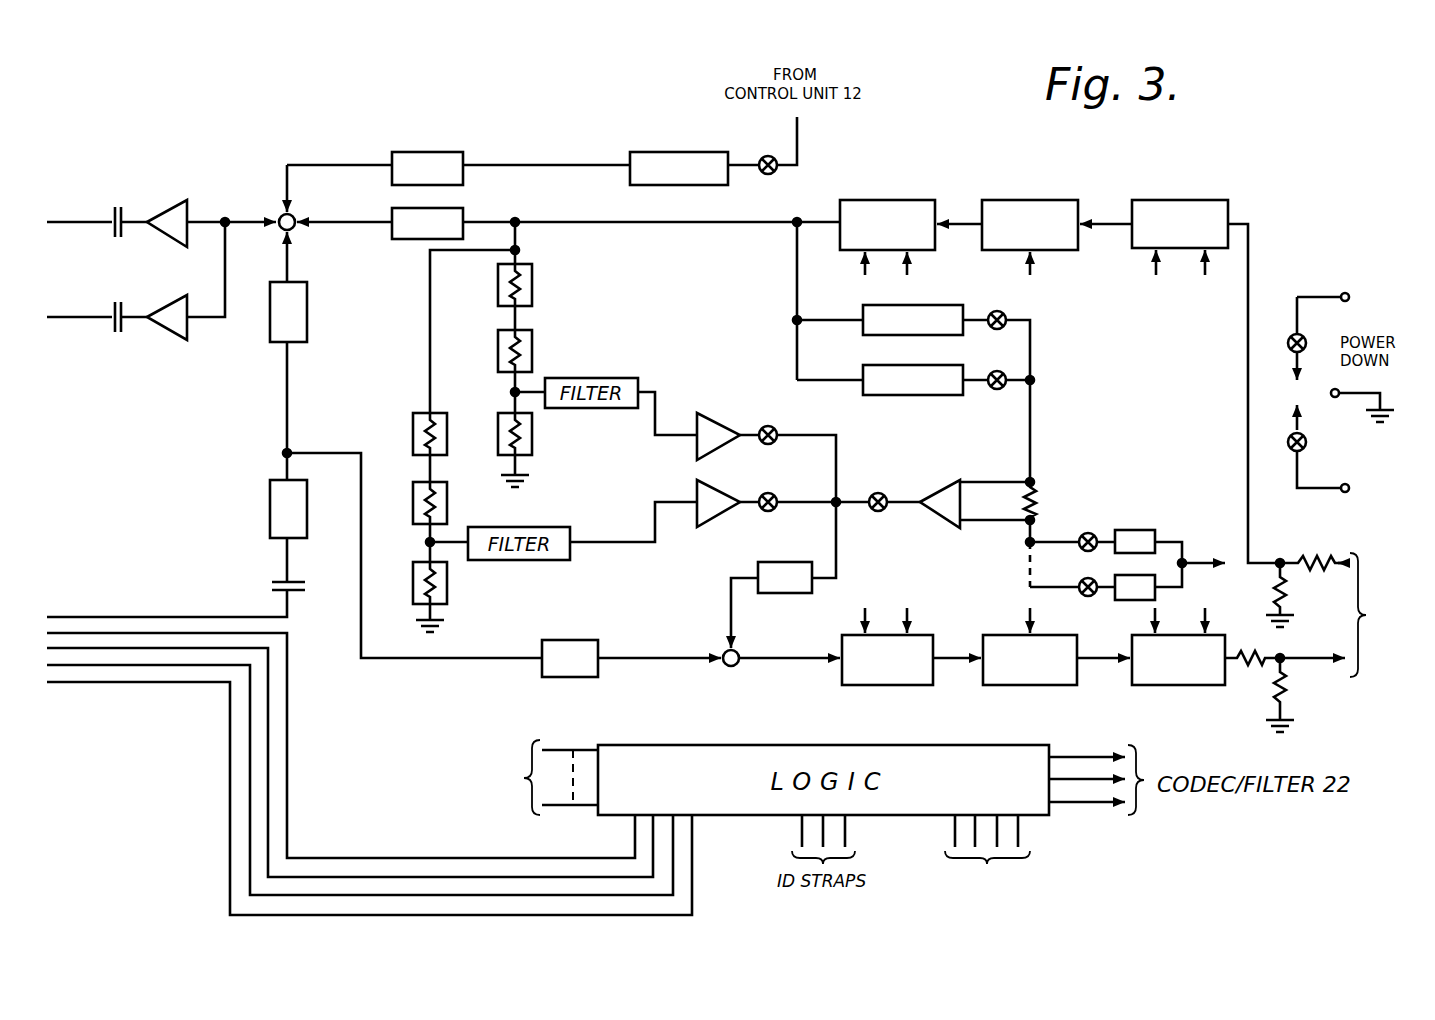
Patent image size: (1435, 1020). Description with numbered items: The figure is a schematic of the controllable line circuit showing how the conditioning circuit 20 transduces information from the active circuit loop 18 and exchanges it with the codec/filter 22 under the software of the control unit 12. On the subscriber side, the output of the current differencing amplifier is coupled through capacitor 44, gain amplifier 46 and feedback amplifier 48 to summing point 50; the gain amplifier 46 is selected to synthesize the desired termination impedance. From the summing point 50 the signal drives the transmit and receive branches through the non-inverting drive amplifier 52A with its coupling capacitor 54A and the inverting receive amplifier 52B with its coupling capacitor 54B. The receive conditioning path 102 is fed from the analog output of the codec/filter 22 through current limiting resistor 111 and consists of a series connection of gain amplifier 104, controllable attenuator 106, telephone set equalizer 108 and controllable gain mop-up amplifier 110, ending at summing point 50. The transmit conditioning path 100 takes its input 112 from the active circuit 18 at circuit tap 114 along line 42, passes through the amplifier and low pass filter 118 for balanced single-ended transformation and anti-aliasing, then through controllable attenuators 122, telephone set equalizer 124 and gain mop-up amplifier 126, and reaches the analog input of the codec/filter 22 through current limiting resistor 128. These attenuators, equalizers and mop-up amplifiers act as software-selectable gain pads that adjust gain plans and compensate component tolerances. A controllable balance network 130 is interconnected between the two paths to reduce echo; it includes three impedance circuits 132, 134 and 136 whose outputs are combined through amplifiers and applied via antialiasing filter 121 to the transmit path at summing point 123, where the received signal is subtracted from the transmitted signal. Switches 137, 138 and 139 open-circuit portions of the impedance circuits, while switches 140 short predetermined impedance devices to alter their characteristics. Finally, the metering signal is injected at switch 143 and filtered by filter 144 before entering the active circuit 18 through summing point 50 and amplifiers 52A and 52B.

The active circuit loop 18 is at (188, 425).
The conditioning circuit 20 is at (847, 173).
The codec/filter 22 is at (1388, 615).
The control unit 12 is at (998, 853).
The line 42 is at (287, 412).
The capacitor 44 is at (275, 583).
The gain amplifier 46 is at (270, 512).
The feedback amplifier 48 is at (275, 335).
The summing point 50 is at (278, 209).
The non-inverting drive amplifier 52A is at (168, 208).
The receive amplifier 52B is at (170, 338).
The coupling capacitor 54A is at (122, 238).
The coupling capacitor 54B is at (110, 330).
The transmit conditioning path 100 is at (1233, 650).
The receive conditioning path 102 is at (962, 222).
The gain amplifier 104 is at (405, 240).
The controllable attenuator 106 is at (893, 200).
The telephone set equalizer 108 is at (1048, 200).
The controllable gain mop-up amplifier 110 is at (1192, 200).
The current limiting resistor 111 is at (1306, 557).
The input 112 is at (455, 661).
The circuit tap 114 is at (287, 456).
The amplifier and low pass filter 118 is at (580, 678).
The antialiasing filter 121 is at (770, 594).
The controllable attenuators 122 is at (908, 686).
The summing point 123 is at (736, 667).
The telephone set equalizer 124 is at (1045, 686).
The gain mop-up amplifier 126 is at (1165, 686).
The current limiting resistor 128 is at (1258, 672).
The controllable balance network 130 is at (748, 366).
The impedance circuit 132 is at (797, 287).
The impedance circuit 134 is at (430, 367).
The impedance circuit 136 is at (520, 259).
The switch 137 is at (788, 488).
The switch 138 is at (804, 488).
The switch 139 is at (891, 488).
The switches 140 is at (1085, 565).
The switch 143 is at (771, 176).
The filter 144 is at (672, 185).